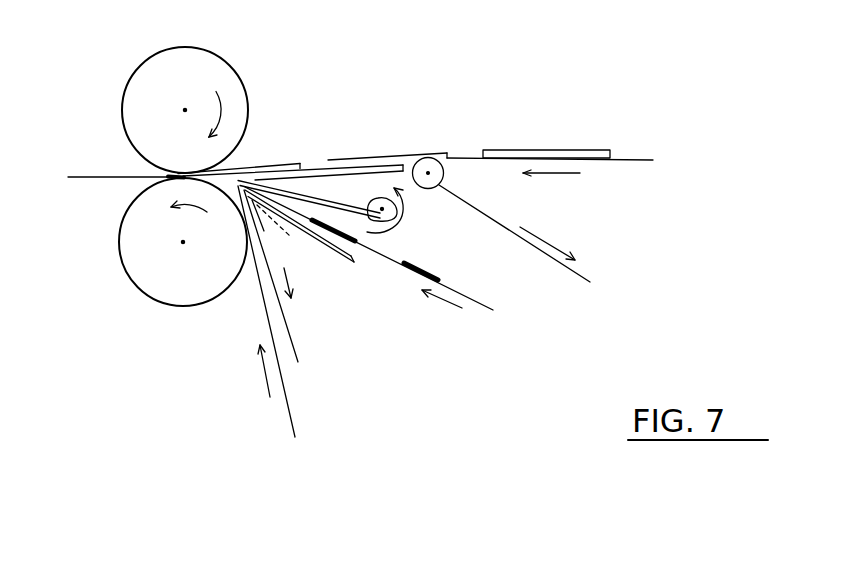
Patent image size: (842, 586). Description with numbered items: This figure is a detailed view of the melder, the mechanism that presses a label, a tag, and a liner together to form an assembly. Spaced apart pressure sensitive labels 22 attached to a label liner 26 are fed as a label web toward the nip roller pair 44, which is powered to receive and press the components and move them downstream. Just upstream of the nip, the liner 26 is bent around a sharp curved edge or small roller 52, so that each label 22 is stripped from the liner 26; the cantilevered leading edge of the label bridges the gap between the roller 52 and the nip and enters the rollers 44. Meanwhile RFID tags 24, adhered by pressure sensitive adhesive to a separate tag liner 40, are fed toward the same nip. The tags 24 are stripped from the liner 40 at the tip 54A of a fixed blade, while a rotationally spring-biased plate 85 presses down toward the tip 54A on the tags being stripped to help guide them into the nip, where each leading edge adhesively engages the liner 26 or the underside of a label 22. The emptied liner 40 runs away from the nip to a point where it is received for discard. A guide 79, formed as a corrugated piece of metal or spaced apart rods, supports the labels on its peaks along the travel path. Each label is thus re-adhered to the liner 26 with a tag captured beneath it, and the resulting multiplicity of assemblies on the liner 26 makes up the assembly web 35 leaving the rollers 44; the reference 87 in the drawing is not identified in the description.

The nip roller pair 44 is at (213, 35).
The assembly web 35 is at (100, 180).
The guide 79 is at (315, 165).
The pressure sensitive label 22 is at (538, 150).
The label liner 26 is at (630, 162).
The small roller 52 is at (443, 184).
The cam 87 is at (331, 215).
The spring-biased plate 85 is at (338, 260).
The RFID tag 24 is at (423, 267).
The tag liner 40 is at (288, 323).
The blade tip 54A is at (278, 228).